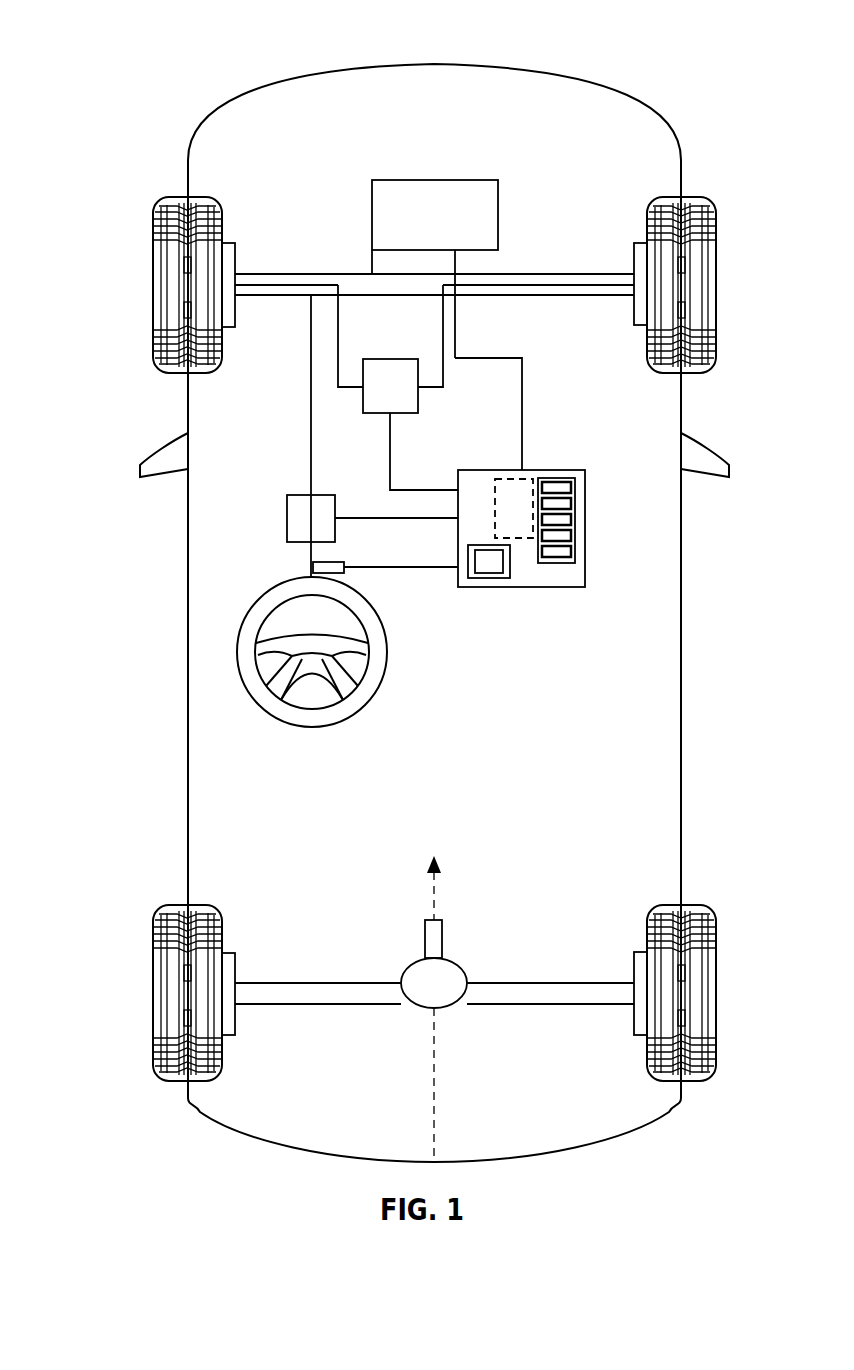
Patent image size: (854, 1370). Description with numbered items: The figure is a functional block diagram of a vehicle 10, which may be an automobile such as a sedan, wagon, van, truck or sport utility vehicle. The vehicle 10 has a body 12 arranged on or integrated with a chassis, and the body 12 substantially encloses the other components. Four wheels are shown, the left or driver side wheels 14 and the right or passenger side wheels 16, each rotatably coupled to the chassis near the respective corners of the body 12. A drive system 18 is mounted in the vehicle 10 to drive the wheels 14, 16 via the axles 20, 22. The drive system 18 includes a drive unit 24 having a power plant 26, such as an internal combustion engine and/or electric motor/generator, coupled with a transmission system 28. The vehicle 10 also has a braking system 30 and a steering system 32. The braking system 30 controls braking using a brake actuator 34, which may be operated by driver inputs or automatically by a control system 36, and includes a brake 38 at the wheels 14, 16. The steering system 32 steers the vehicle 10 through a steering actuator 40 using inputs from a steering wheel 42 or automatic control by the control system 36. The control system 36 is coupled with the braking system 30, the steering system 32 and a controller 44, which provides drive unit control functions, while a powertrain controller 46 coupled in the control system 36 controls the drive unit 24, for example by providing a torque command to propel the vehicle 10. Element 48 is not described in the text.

The vehicle 10 is at (684, 46).
The body 12 is at (187, 660).
The left or driver side wheels 14 is at (152, 265).
The right or passenger side wheels 16 is at (718, 270).
The drive system 18 is at (516, 170).
The axle 20 is at (563, 272).
The axle 22 is at (560, 983).
The drive unit 24 is at (363, 152).
The power plant 26 is at (450, 230).
The transmission system 28 is at (372, 260).
The braking system 30 is at (380, 428).
The steering system 32 is at (368, 718).
The brake actuator 34 is at (405, 401).
The control system 36 is at (560, 703).
The brake 38 is at (228, 243).
The steering actuator 40 is at (287, 510).
The steering wheel 42 is at (310, 727).
The controller 44 is at (491, 530).
The powertrain controller 46 is at (488, 578).
The memory 48 is at (510, 488).